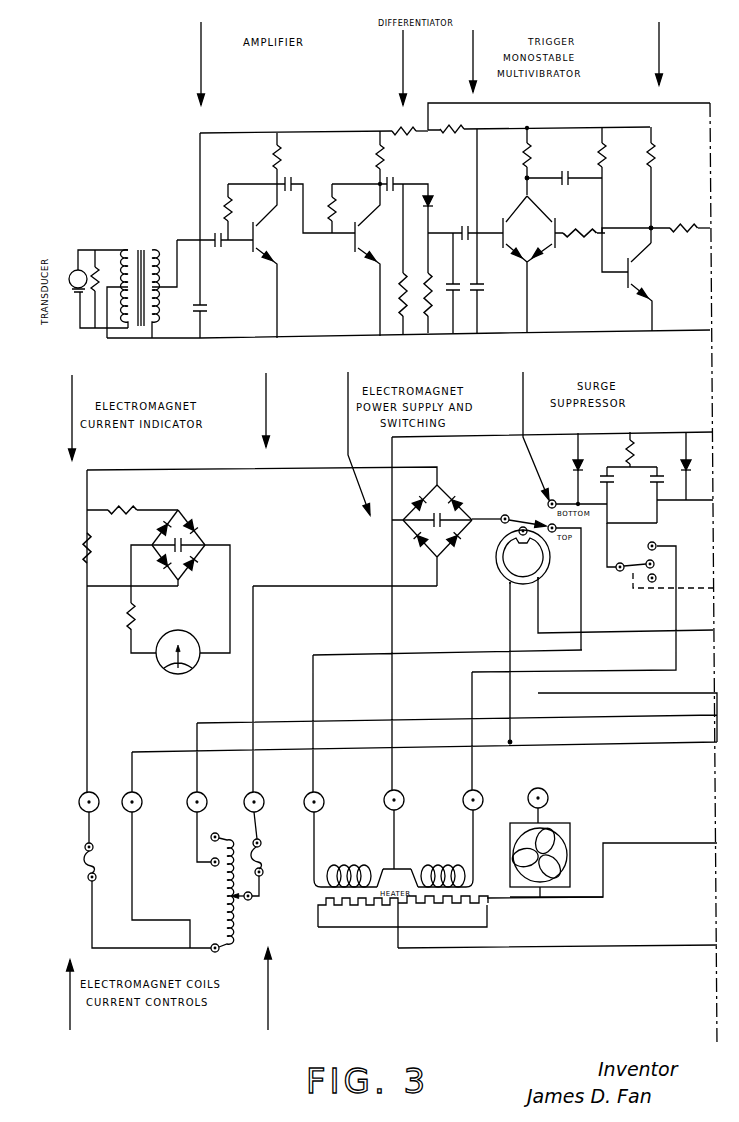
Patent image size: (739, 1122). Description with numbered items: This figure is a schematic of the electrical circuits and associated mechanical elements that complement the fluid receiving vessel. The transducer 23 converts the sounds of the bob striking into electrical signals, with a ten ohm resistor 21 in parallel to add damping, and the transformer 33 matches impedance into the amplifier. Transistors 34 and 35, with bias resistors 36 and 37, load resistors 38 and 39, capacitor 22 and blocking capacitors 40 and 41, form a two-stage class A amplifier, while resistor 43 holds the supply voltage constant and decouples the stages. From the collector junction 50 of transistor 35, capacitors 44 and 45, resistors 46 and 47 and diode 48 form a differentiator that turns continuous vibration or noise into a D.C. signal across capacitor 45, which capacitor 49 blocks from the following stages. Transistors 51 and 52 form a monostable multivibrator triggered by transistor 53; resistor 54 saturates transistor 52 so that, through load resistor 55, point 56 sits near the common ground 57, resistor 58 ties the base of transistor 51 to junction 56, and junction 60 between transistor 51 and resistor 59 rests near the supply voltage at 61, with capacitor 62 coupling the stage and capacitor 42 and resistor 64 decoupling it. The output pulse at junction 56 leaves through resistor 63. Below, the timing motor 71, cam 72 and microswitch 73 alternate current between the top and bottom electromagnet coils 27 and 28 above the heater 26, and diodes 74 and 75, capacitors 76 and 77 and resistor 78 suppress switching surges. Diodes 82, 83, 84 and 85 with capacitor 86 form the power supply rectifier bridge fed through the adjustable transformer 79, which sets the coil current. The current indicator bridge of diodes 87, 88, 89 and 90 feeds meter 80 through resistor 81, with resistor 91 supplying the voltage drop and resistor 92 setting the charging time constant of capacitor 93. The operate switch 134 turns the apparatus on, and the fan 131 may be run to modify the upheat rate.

The transducer 23 is at (71, 276).
The ten ohm resistor 21 is at (102, 289).
The transformer 33 is at (142, 286).
The capacitor 22 is at (207, 235).
The resistor 36 is at (219, 212).
The blocking capacitor 40 is at (217, 248).
The transistor 34 is at (265, 261).
The load resistor 38 is at (284, 157).
The blocking capacitor 41 is at (319, 205).
The resistor 37 is at (340, 208).
The collector junction 50 is at (359, 192).
The transistor 35 is at (367, 260).
The load resistor 39 is at (390, 157).
The capacitor 44 is at (407, 177).
The resistor 43 is at (410, 125).
The diode 48 is at (437, 213).
The resistor 46 is at (395, 259).
The resistor 47 is at (435, 283).
The capacitor 49 is at (465, 228).
The capacitor 45 is at (457, 283).
The capacitor 42 is at (484, 231).
The resistor 64 is at (539, 122).
The supply voltage 61 is at (524, 127).
The resistor 59 is at (536, 169).
The junction 60 is at (515, 179).
The capacitor 62 is at (564, 170).
The resistor 54 is at (603, 200).
The load resistor 55 is at (642, 185).
The transistor 53 is at (515, 229).
The transistor 51 is at (541, 264).
The resistor 58 is at (580, 225).
The junction 56 is at (627, 223).
The resistor 63 is at (690, 222).
The transistor 52 is at (645, 287).
The common ground 57 is at (589, 333).
The resistor 92 is at (132, 504).
The resistor 91 is at (94, 548).
The diode 87 is at (159, 527).
The diode 88 is at (197, 527).
The diode 89 is at (160, 565).
The diode 90 is at (197, 562).
The capacitor 93 is at (178, 543).
The resistor 81 is at (141, 599).
The meter 80 is at (188, 618).
The diode 82 is at (418, 502).
The diode 83 is at (454, 502).
The diode 84 is at (418, 553).
The diode 85 is at (454, 538).
The capacitor 86 is at (437, 512).
The microswitch 73 is at (509, 516).
The timing motor 71 is at (509, 564).
The cam 72 is at (517, 559).
The diode 74 is at (585, 469).
The resistor 78 is at (638, 449).
The diode 75 is at (685, 466).
The capacitor 76 is at (628, 495).
The capacitor 77 is at (662, 495).
The operate switch 134 is at (660, 555).
The adjustable transformer 79 is at (227, 892).
The electromagnet coil 27 is at (348, 849).
The electromagnet coil 28 is at (435, 848).
The heater 26 is at (517, 895).
The fan 131 is at (563, 841).